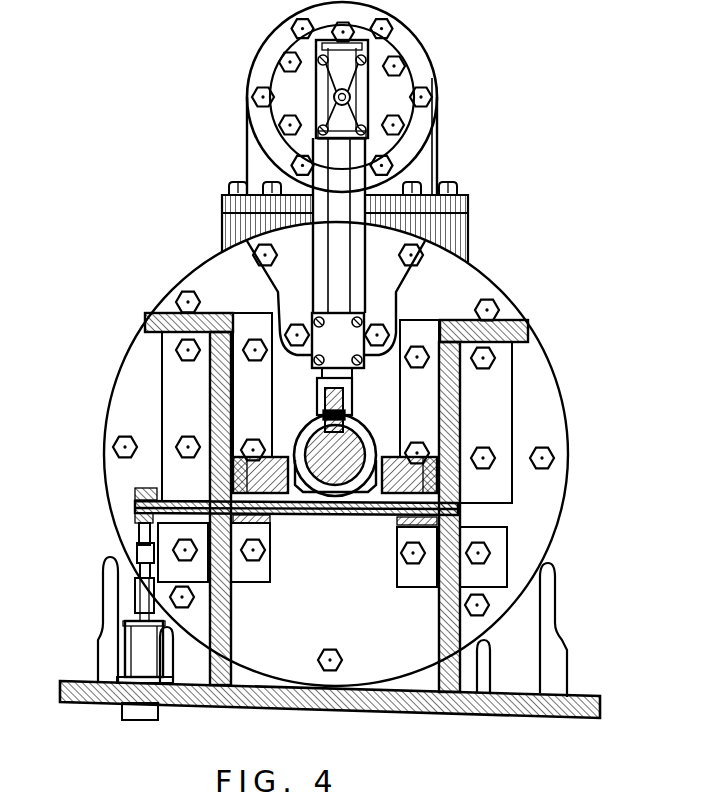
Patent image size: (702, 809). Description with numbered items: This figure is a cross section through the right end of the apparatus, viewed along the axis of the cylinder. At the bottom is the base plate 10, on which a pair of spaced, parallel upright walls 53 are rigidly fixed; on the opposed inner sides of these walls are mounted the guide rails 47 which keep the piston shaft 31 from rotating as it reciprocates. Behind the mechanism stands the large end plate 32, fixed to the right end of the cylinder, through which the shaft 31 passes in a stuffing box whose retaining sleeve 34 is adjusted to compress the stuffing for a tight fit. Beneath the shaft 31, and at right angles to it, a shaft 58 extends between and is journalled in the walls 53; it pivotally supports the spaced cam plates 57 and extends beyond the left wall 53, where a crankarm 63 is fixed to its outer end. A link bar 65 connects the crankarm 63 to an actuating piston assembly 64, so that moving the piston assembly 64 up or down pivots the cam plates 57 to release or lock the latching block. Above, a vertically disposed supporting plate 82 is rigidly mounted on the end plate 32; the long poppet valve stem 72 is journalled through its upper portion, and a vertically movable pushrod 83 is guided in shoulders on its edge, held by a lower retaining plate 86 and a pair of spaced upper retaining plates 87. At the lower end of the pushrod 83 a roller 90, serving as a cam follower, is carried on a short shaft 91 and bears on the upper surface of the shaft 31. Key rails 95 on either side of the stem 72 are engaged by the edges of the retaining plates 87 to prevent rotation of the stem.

The base plate 10 is at (350, 697).
The piston shaft 31 is at (309, 426).
The end plate 32 is at (488, 291).
The retaining sleeve 34 is at (358, 471).
The guide rails 47 is at (283, 457).
The upright plates or walls 53 is at (222, 624).
The cam plates 57 is at (252, 446).
The shaft 58 is at (318, 516).
The crankarm 63 is at (142, 528).
The link bar 65 is at (143, 558).
The piston assembly 64 is at (128, 628).
The poppet valve stem 72 is at (333, 97).
The supporting plate 82 is at (316, 268).
The pushrod 83 is at (342, 278).
The retaining plate 86 is at (344, 351).
The retaining plates 87 is at (362, 73).
The roller 90 is at (341, 404).
The short shaft 91 is at (347, 414).
The key rails 95 is at (353, 97).